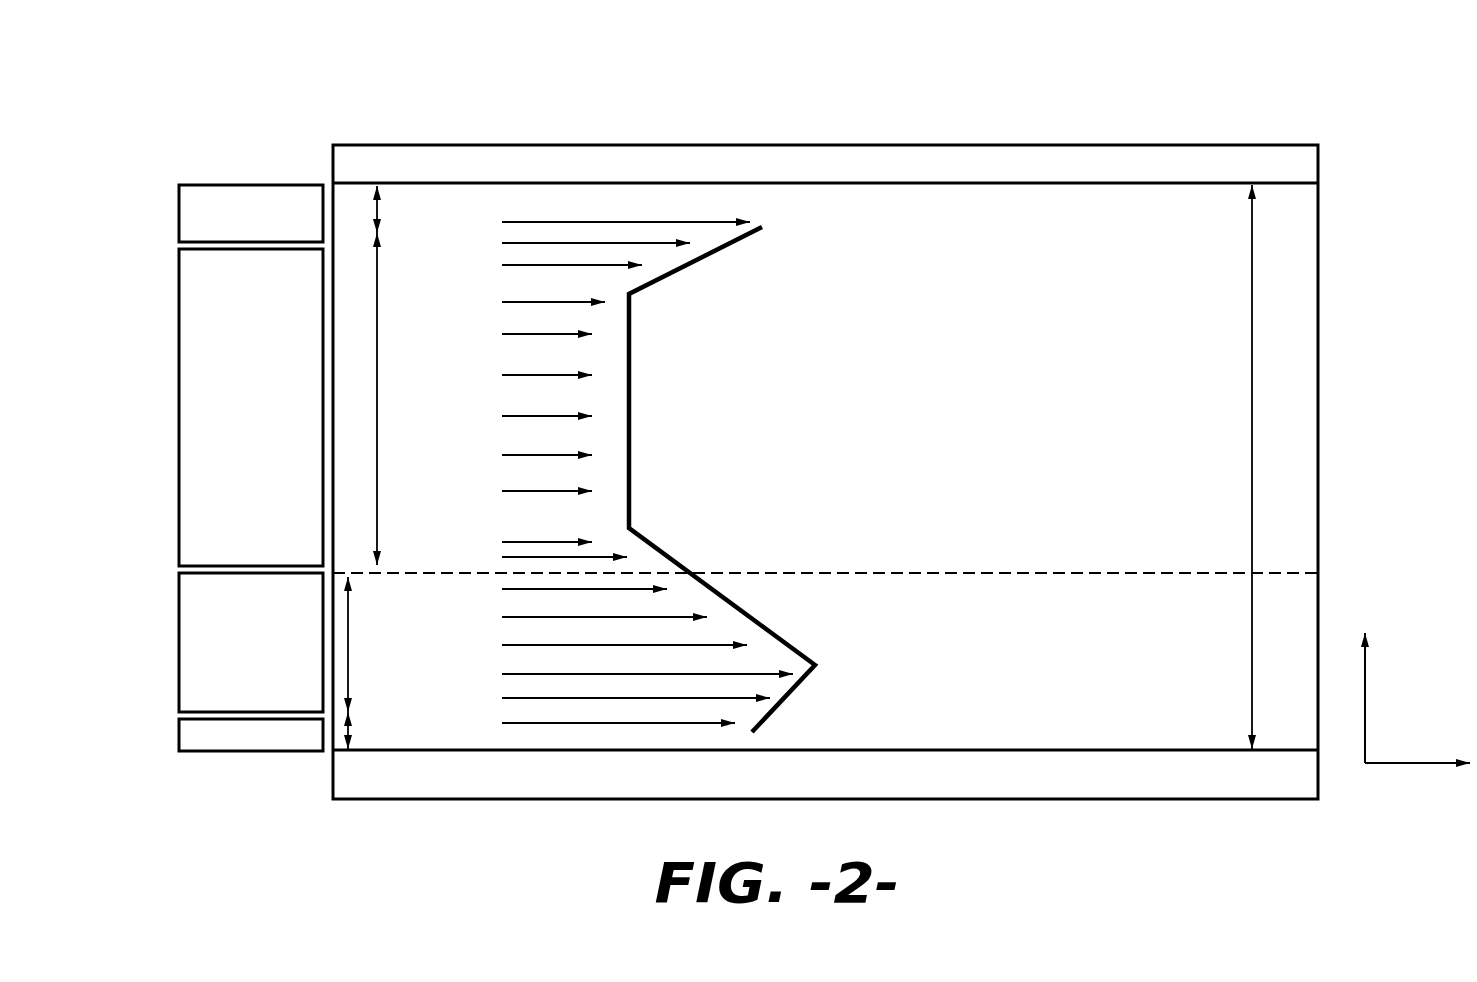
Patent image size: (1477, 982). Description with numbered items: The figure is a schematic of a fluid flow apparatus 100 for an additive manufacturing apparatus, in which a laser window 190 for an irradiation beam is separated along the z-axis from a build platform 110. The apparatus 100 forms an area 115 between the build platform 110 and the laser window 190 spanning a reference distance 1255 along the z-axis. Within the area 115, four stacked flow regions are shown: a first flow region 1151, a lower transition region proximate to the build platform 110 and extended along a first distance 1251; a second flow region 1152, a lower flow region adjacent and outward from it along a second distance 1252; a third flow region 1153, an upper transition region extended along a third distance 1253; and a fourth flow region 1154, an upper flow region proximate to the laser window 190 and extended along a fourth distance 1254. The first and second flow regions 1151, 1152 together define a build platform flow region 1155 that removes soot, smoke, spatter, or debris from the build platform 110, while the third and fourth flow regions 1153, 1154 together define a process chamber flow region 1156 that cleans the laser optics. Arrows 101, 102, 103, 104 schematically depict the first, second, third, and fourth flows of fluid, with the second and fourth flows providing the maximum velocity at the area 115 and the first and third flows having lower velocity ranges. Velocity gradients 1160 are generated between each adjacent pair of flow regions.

The fluid flow apparatus 100 is at (774, 100).
The build platform 110 is at (986, 787).
The laser window 190 is at (870, 157).
The area 115 is at (919, 437).
The build platform flow region 1155 is at (1066, 667).
The process chamber flow region 1156 is at (1066, 527).
The velocity gradients 1160 is at (688, 273).
The arrows depicting first flow of fluid 101 is at (520, 737).
The arrows depicting second flow of fluid 102 is at (485, 635).
The arrows depicting third flow of fluid 103 is at (487, 399).
The arrows depicting fourth flow of fluid 104 is at (487, 219).
The first flow region 1151 is at (178, 733).
The second flow region 1152 is at (178, 630).
The third flow region 1153 is at (178, 328).
The fourth flow region 1154 is at (178, 212).
The first distance 1251 is at (350, 733).
The second distance 1252 is at (350, 627).
The third distance 1253 is at (377, 367).
The fourth distance 1254 is at (377, 220).
The reference distance 1255 is at (1252, 403).